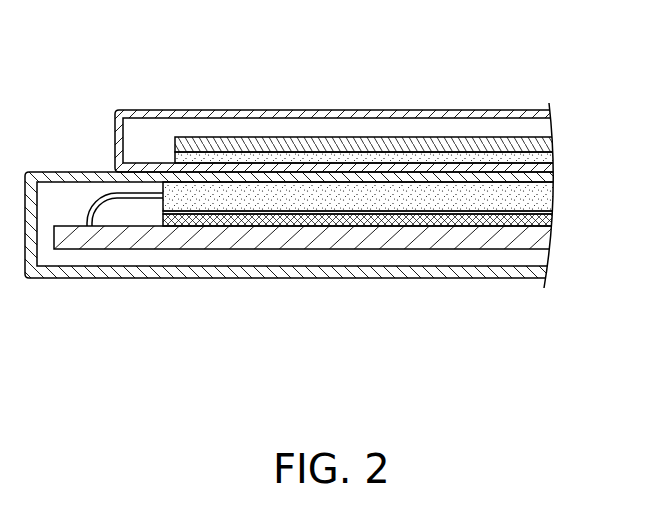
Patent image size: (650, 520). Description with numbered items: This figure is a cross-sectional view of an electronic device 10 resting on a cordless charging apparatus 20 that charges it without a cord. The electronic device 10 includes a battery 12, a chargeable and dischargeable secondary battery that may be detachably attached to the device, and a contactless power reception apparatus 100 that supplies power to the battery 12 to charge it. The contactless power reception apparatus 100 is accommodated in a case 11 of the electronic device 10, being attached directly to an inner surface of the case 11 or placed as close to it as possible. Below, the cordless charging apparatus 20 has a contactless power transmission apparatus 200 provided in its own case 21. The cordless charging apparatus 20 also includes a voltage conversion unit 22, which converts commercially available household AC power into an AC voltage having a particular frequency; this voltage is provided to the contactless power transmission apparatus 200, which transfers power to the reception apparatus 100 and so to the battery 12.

The electronic device 10 is at (368, 97).
The case 11 is at (285, 117).
The battery 12 is at (538, 146).
The contactless power reception apparatus 100 is at (540, 157).
The cordless charging apparatus 20 is at (323, 269).
The case 21 is at (292, 272).
The voltage conversion unit 22 is at (538, 238).
The contactless power transmission apparatus 200 is at (565, 182).